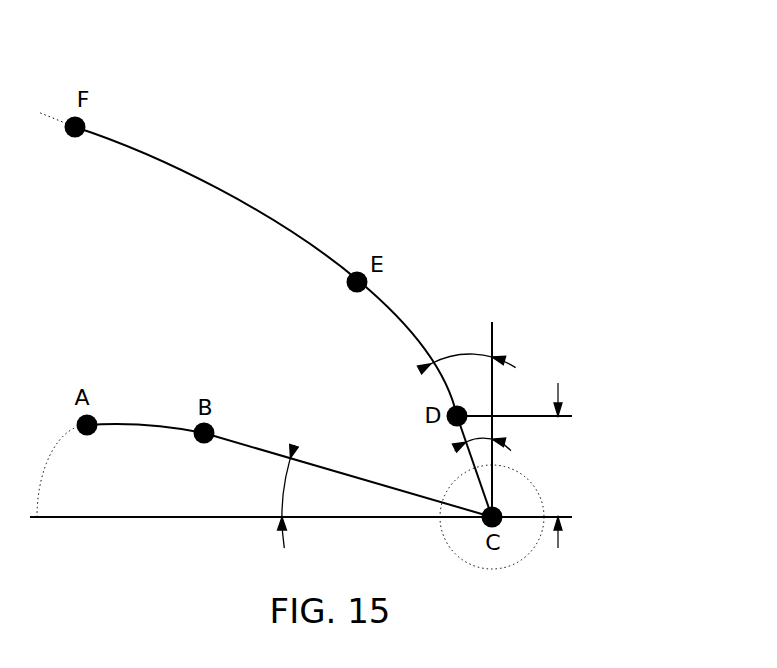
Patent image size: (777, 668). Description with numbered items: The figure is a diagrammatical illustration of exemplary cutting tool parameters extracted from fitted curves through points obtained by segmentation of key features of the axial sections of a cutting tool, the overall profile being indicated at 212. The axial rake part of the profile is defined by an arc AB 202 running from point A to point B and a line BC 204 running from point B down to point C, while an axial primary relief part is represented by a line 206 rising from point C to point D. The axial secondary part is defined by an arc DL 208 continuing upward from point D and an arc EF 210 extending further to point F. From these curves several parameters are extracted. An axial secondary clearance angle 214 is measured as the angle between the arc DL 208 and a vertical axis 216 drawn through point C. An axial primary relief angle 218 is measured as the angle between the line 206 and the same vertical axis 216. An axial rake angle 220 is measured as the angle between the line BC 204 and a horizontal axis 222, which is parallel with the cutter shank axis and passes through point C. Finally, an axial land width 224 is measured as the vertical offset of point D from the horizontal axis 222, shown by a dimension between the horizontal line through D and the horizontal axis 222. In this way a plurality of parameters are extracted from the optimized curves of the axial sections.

The arc AB 202 is at (133, 423).
The line BC 204 is at (261, 451).
The line CD (axial primary relief part) 206 is at (472, 458).
The arc DL 208 is at (403, 322).
The arc EF 210 is at (200, 178).
The cutting insert profile 212 is at (553, 38).
The axial secondary clearance angle 214 is at (437, 359).
The vertical axis 216 is at (494, 332).
The axial primary relief angle 218 is at (512, 444).
The axial rake angle 220 is at (297, 540).
The horizontal axis 222 is at (160, 519).
The axial land width 224 is at (559, 498).